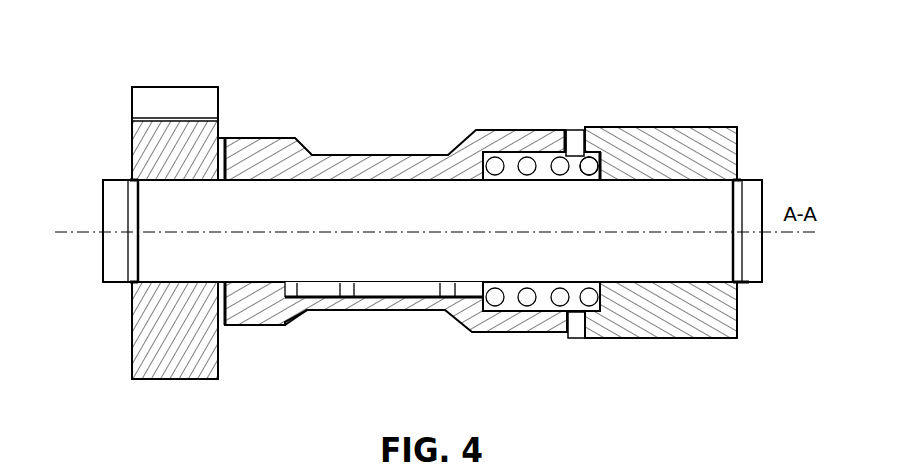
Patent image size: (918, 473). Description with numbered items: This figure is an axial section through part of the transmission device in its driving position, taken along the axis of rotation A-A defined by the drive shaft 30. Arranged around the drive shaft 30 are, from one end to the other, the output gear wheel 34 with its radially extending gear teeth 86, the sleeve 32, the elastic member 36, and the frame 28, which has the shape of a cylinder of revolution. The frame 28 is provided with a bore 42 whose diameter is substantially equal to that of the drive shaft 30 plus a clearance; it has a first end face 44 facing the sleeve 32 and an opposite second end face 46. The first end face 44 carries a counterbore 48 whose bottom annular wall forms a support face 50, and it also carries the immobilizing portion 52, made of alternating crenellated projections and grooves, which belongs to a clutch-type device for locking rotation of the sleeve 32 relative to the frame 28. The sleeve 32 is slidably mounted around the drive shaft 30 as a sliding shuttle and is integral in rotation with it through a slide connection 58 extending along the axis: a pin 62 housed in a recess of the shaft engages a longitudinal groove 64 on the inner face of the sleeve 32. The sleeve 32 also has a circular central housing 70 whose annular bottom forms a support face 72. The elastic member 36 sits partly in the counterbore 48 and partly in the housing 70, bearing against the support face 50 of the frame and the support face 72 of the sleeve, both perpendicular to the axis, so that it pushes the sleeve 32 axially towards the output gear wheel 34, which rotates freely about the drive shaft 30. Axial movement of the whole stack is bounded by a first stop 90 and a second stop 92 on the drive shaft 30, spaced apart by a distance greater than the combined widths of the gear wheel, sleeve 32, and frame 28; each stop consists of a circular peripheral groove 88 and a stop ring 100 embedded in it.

The frame 28 is at (642, 127).
The drive shaft 30 is at (700, 178).
The sleeve 32 is at (373, 154).
The output gear wheel 34 is at (132, 145).
The elastic member 36 is at (516, 309).
The bore 42 is at (668, 178).
The first end face 44 is at (597, 150).
The second end face 46 is at (759, 165).
The counterbore 48 is at (590, 155).
The support face 50 is at (585, 314).
The immobilizing portion 52 is at (569, 124).
The slide connection 58 is at (430, 305).
The pin 62 is at (378, 288).
The groove 64 is at (290, 298).
The housing 70 is at (503, 307).
The support face 72 is at (492, 155).
The gear teeth 86 is at (150, 87).
The circular peripheral groove 88 is at (128, 253).
The first stop 90 is at (131, 178).
The second stop 92 is at (739, 177).
The stop ring 100 is at (132, 284).